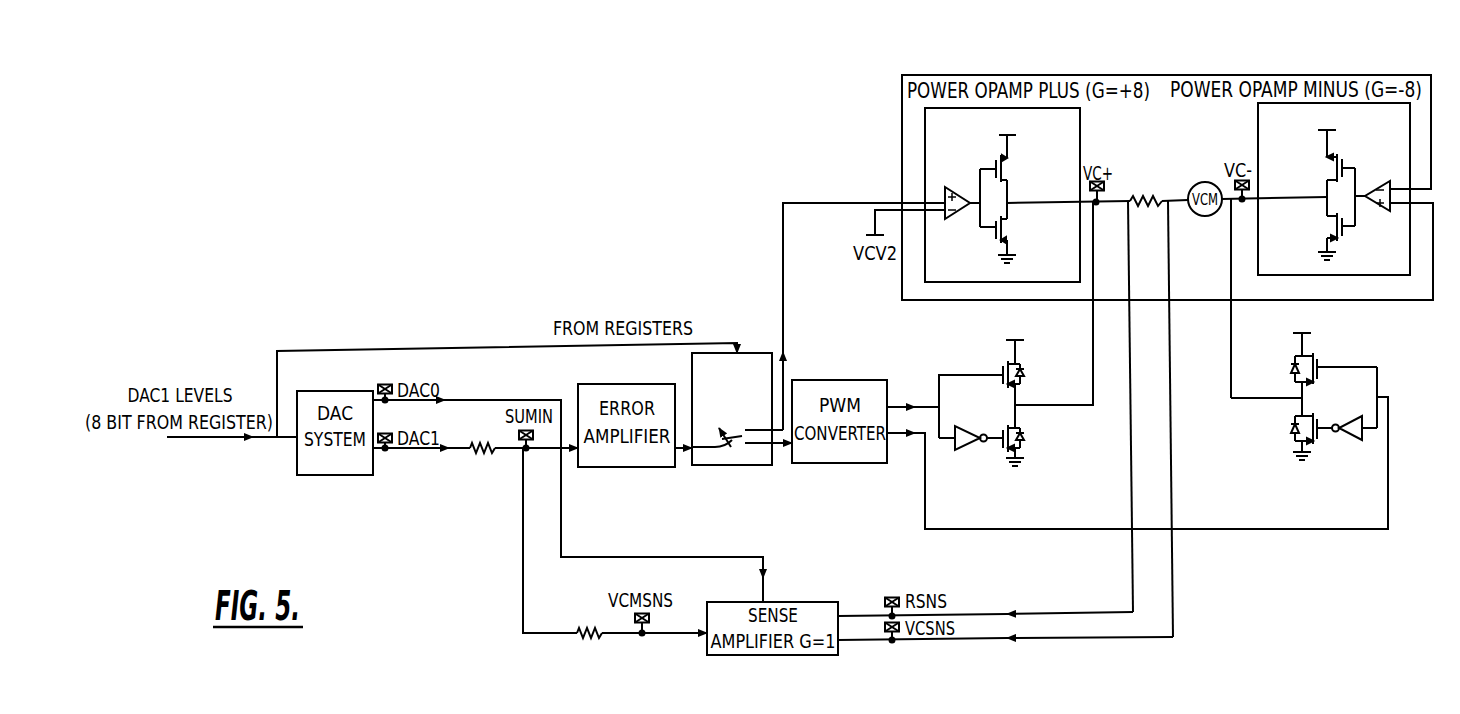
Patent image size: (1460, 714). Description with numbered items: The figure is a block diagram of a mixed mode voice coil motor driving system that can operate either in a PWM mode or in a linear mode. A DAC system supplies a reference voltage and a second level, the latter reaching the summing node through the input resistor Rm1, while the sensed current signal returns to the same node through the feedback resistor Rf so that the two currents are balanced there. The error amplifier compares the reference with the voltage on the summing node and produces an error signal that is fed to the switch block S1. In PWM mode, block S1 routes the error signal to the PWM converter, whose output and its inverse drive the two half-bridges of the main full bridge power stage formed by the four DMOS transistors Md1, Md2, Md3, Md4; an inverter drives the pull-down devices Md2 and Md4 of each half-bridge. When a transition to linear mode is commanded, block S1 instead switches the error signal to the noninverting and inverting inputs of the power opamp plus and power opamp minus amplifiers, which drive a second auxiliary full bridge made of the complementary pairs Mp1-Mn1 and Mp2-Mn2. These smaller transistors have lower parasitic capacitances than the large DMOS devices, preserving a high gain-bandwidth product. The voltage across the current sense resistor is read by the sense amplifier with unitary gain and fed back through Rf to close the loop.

The input resistor Rm1 is at (485, 435).
The S1 block S1 is at (742, 409).
The DMOS transistor Md1 is at (1036, 359).
The DMOS transistor Md2 is at (1039, 435).
The DMOS transistor Md3 is at (1307, 354).
The DMOS transistor Md4 is at (1307, 430).
The MOS transistor Mp1 is at (1021, 157).
The MOS transistor Mn1 is at (1021, 233).
The MOS transistor Mp2 is at (1311, 152).
The MOS transistor Mn2 is at (1311, 228).
The feedback resistor Rf is at (590, 619).